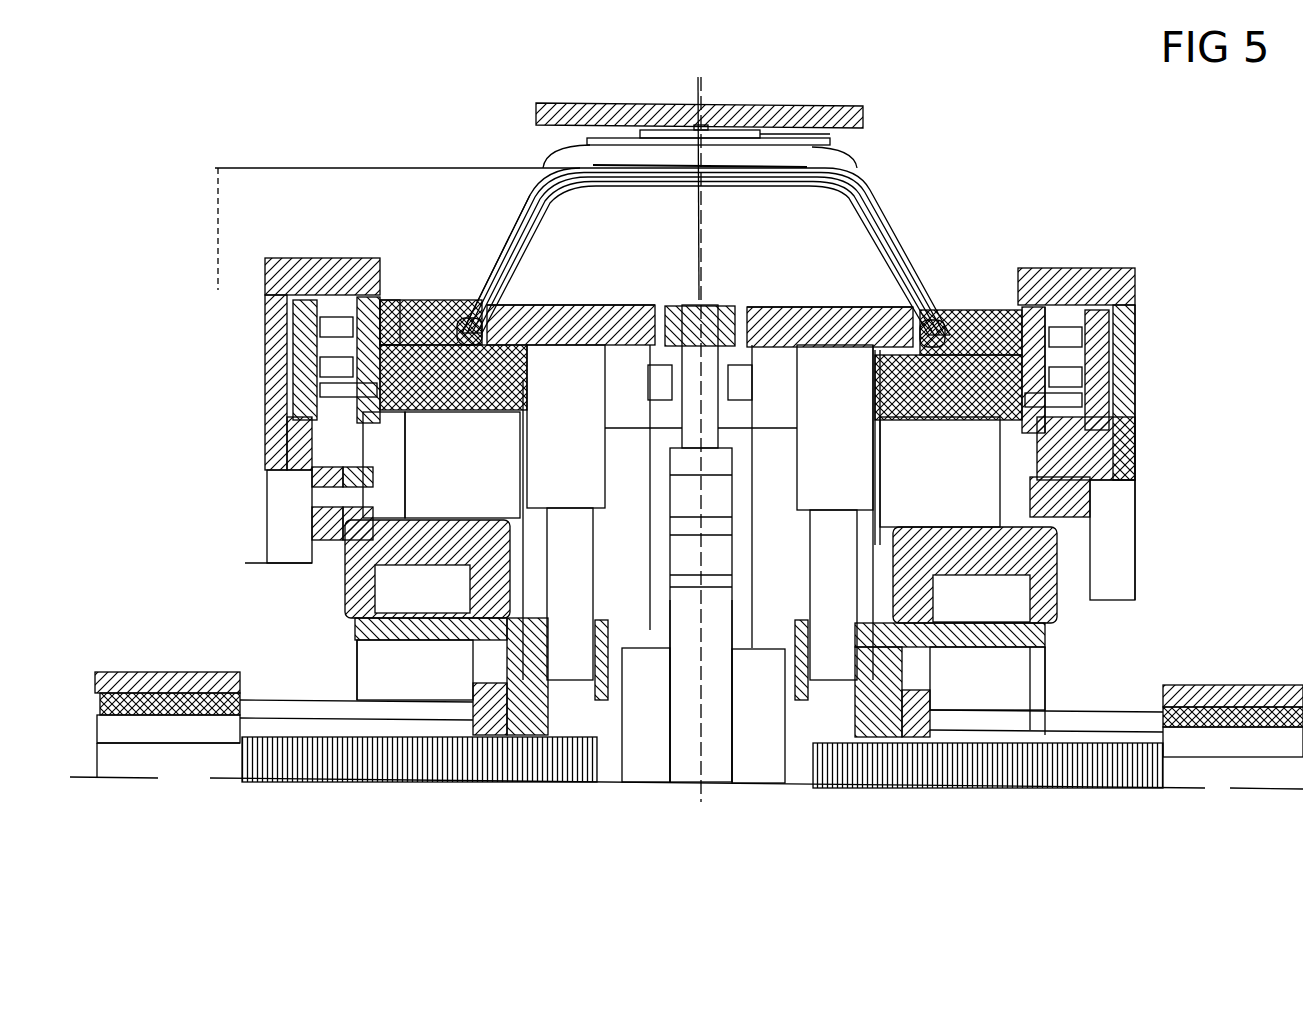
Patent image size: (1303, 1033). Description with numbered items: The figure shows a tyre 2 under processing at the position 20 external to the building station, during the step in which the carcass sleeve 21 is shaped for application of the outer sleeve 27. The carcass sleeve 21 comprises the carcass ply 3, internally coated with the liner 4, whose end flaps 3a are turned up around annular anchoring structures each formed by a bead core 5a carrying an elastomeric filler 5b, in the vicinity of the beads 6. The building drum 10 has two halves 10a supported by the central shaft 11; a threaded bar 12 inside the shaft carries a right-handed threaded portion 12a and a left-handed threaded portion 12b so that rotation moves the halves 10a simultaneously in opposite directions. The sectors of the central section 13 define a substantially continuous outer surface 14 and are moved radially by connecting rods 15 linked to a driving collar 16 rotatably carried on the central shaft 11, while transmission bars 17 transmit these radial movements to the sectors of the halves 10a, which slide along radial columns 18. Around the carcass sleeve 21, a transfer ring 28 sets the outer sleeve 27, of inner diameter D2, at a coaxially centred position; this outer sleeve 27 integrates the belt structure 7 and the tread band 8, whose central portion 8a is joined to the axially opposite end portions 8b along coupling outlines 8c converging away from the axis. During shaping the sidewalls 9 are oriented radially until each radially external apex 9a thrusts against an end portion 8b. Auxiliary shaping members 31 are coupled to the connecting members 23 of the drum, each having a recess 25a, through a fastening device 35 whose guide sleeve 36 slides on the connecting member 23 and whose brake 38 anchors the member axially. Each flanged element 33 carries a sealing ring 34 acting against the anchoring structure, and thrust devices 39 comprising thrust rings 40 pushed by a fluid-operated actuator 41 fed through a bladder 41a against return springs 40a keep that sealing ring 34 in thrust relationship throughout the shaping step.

The tyre 2 is at (868, 157).
The carcass ply 3 is at (882, 197).
The end flaps 3a is at (913, 255).
The liner 4 is at (790, 190).
The bead core 5a is at (458, 305).
The elastomeric filler 5b is at (937, 283).
The beads 6 is at (448, 305).
The belt structure 7 is at (773, 167).
The tread band 8 is at (792, 153).
The central portion 8a is at (665, 147).
The end portions 8b is at (563, 162).
The coupling outlines 8c is at (587, 133).
The sidewalls 9 is at (528, 192).
The radially external apex 9a is at (503, 188).
The building drum 10 is at (640, 783).
The halves 10a is at (615, 295).
The central shaft 11 is at (135, 672).
The threaded bar 12 is at (190, 760).
The right-handed threaded portion 12a is at (450, 782).
The left-handed threaded portion 12b is at (930, 790).
The central section 13 is at (726, 297).
The outer surface 14 is at (520, 293).
The connecting rods 15 is at (660, 493).
The driving collar 16 is at (720, 752).
The transmission bars 17 is at (748, 370).
The columns 18 is at (553, 588).
The position 20 is at (1167, 443).
The carcass sleeve 21 is at (513, 190).
The connecting members 23 is at (388, 643).
The recess 25a is at (938, 648).
The outer sleeve 27 is at (705, 140).
The transfer ring 28 is at (607, 117).
The auxiliary shaping members 31 is at (318, 255).
The flanged element 33 is at (312, 468).
The sealing ring 34 is at (405, 300).
The fastening device 35 is at (462, 517).
The guide sleeve 36 is at (1058, 603).
The brake 38 is at (403, 598).
The thrust devices 39 is at (293, 325).
The thrust ring 40 is at (397, 292).
The return springs 40a is at (1062, 350).
The fluid-operated actuator 41 is at (300, 362).
The bladder 41a is at (300, 390).
The inner diameter D2 is at (217, 233).